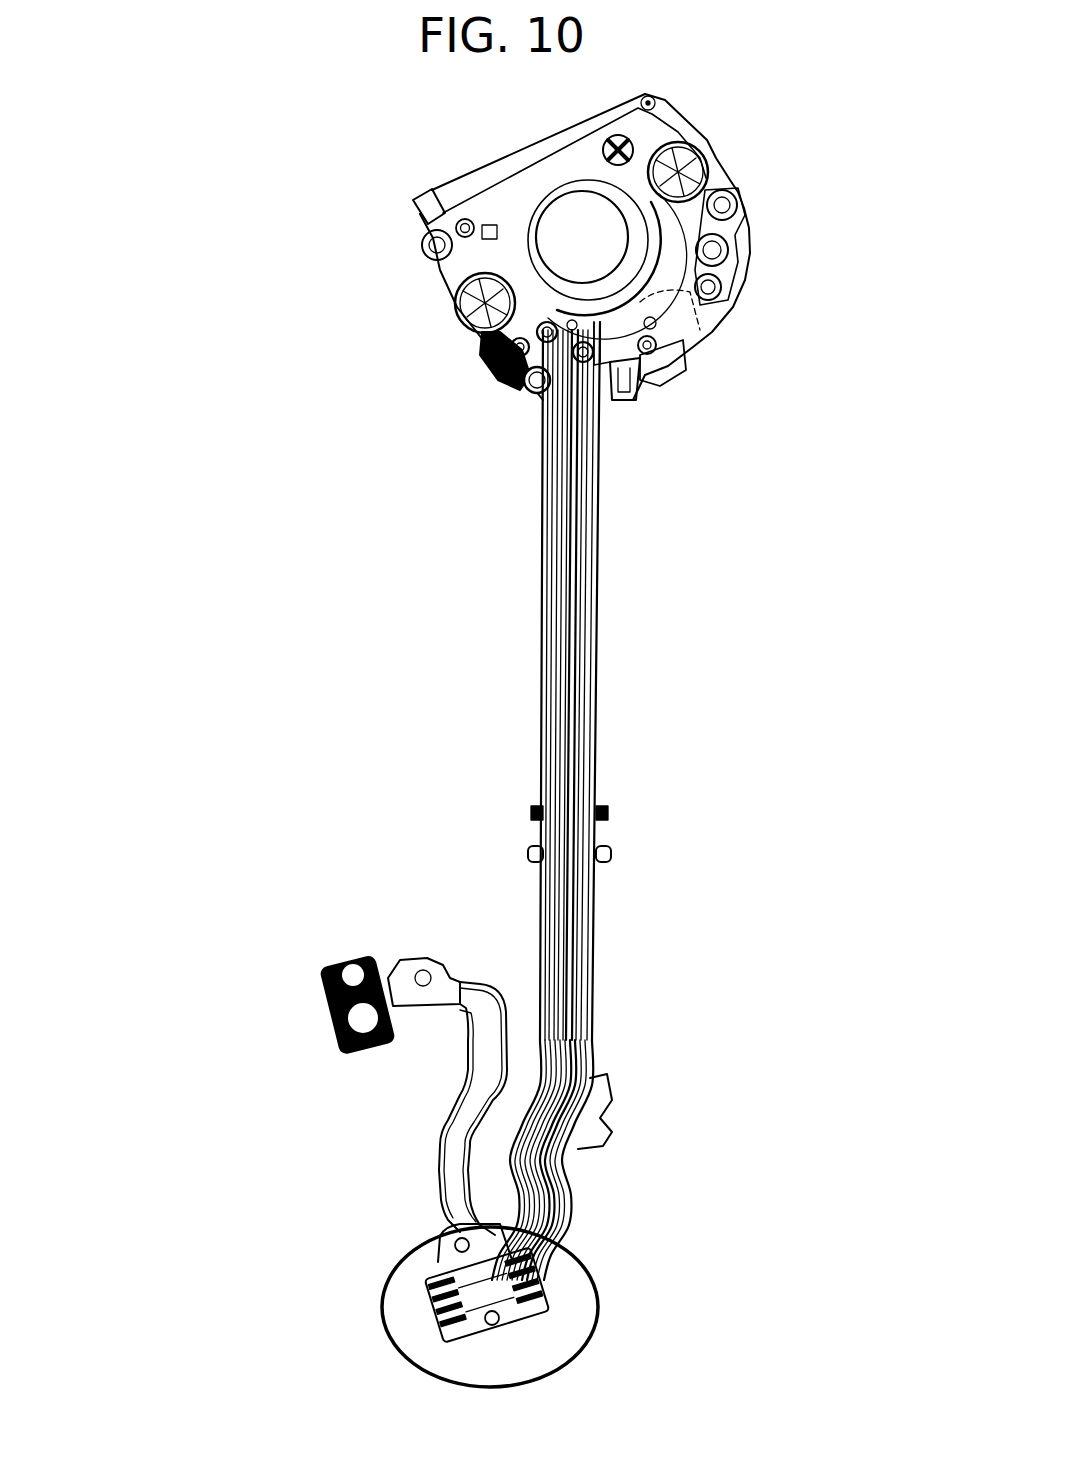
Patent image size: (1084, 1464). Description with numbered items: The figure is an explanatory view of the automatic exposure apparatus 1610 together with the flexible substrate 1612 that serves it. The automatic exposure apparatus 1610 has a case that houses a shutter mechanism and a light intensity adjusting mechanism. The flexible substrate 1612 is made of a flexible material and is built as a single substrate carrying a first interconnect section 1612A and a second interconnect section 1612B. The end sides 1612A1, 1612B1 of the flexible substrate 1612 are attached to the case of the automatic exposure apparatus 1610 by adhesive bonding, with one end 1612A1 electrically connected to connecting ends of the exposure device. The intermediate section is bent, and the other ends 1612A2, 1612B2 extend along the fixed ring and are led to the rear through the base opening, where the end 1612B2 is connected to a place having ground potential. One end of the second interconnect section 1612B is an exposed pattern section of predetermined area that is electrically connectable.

The automatic exposure apparatus 1610 is at (508, 210).
The flexible substrate 1612 is at (491, 801).
The first interconnect section 1612A is at (578, 507).
The end side of first interconnect section 1612A1 is at (518, 326).
The other end of first interconnect section 1612A2 is at (366, 1305).
The second interconnect section 1612B is at (550, 703).
The end side of second interconnect section 1612B1 is at (495, 360).
The other end of second interconnect section 1612B2 is at (333, 1000).